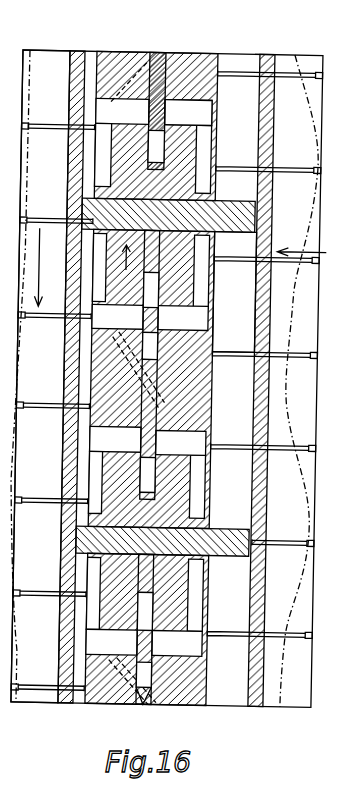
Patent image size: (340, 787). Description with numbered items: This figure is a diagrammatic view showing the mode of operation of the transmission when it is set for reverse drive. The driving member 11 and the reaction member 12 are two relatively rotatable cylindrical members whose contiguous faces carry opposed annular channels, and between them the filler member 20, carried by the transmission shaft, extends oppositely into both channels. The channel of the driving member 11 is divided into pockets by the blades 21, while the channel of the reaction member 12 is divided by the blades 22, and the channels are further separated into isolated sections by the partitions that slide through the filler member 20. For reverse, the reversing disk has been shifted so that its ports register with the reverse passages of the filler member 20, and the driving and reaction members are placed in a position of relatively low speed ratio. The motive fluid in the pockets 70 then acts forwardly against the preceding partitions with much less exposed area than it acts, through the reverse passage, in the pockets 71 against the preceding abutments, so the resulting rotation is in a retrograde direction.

The driving member 11 is at (78, 52).
The reaction member 12 is at (270, 60).
The filler member 20 is at (200, 58).
The blades 21 is at (48, 122).
The blades 22 is at (300, 172).
The pockets 70 is at (84, 466).
The pockets 71 is at (234, 292).